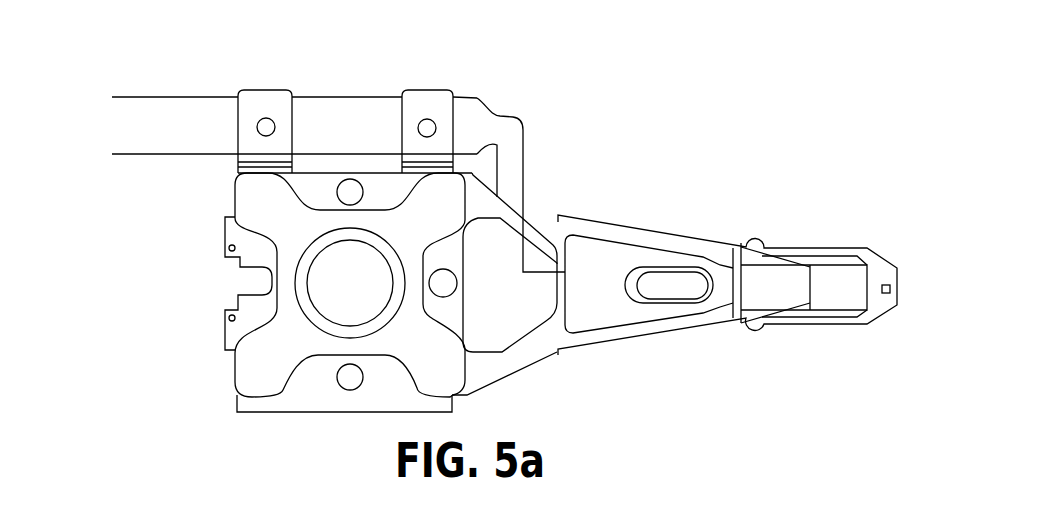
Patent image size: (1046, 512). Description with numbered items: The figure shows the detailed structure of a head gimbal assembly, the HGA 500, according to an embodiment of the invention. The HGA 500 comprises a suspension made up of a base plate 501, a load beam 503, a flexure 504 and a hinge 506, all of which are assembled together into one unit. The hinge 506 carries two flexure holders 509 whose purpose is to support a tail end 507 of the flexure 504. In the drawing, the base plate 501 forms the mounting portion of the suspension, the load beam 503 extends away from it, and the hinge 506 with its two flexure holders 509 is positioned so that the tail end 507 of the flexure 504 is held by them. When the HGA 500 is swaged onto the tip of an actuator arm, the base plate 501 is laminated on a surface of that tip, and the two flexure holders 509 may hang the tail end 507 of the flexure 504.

The HGA 500 is at (528, 103).
The base plate 501 is at (288, 341).
The load beam 503 is at (605, 263).
The flexure 504 is at (510, 170).
The hinge 506 is at (505, 358).
The tail end 507 is at (388, 98).
The flexure holders 509 is at (417, 143).